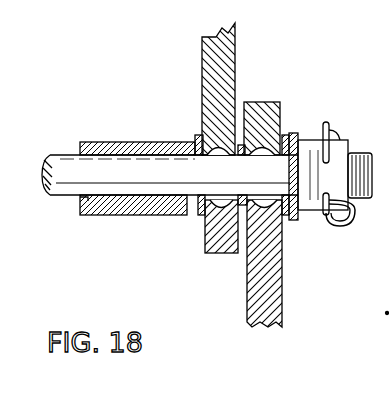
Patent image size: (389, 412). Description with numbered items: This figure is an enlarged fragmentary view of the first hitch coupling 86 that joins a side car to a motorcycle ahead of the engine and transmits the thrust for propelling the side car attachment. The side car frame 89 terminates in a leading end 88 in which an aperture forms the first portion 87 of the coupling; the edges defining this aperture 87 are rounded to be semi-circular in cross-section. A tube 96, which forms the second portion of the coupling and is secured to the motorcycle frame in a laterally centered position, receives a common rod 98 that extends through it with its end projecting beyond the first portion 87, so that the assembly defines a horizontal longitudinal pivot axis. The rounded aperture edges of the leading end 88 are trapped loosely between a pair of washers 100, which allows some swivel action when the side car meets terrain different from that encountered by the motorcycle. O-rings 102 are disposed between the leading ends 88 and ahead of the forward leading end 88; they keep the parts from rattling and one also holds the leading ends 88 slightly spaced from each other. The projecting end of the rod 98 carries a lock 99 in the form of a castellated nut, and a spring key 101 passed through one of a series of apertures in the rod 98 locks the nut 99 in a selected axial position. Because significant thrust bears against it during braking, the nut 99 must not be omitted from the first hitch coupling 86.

The first hitch coupling 86 is at (291, 93).
The first portion 87 is at (193, 132).
The leading end 88 is at (228, 60).
The frame 89 is at (373, 299).
The tube 96 is at (118, 214).
The rod 98 is at (128, 170).
The lock 99 is at (310, 140).
The washer 100 is at (197, 222).
The spring key 101 is at (340, 130).
The O-ring 102 is at (250, 137).